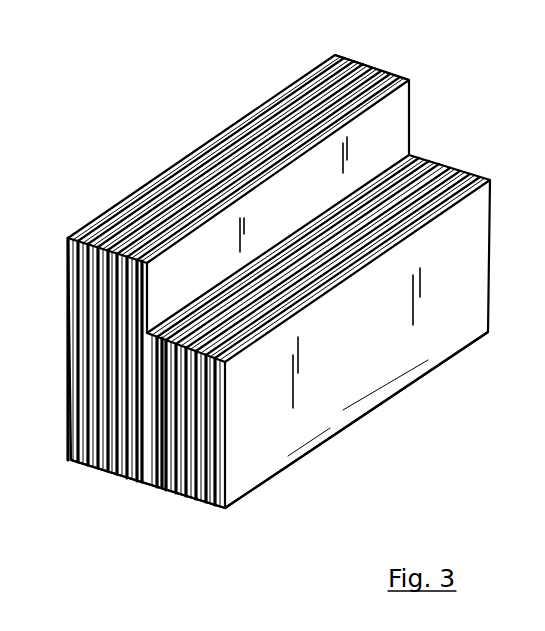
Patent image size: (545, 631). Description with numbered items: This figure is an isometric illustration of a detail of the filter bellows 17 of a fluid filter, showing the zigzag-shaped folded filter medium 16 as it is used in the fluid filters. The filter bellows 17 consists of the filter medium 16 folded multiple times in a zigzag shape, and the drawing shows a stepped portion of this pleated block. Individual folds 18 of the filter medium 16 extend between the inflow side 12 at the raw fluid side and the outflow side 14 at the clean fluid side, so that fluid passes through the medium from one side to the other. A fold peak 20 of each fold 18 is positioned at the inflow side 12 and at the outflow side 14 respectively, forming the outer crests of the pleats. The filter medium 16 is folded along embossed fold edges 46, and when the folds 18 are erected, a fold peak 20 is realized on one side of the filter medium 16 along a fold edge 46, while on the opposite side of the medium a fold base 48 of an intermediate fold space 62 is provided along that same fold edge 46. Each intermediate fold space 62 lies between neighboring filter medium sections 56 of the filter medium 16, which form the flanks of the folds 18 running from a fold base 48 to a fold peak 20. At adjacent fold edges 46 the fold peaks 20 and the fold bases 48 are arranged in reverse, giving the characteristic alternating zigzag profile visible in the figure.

The inflow side 12 is at (217, 104).
The outflow side 14 is at (405, 409).
The filter medium 16 is at (310, 450).
The filter bellows 17 is at (409, 65).
The fold 18 is at (163, 488).
The fold peak 20 is at (146, 185).
The fold edge 46 is at (325, 103).
The fold base 48 is at (85, 433).
The filter medium section 56 is at (268, 215).
The intermediate fold space 62 is at (75, 234).